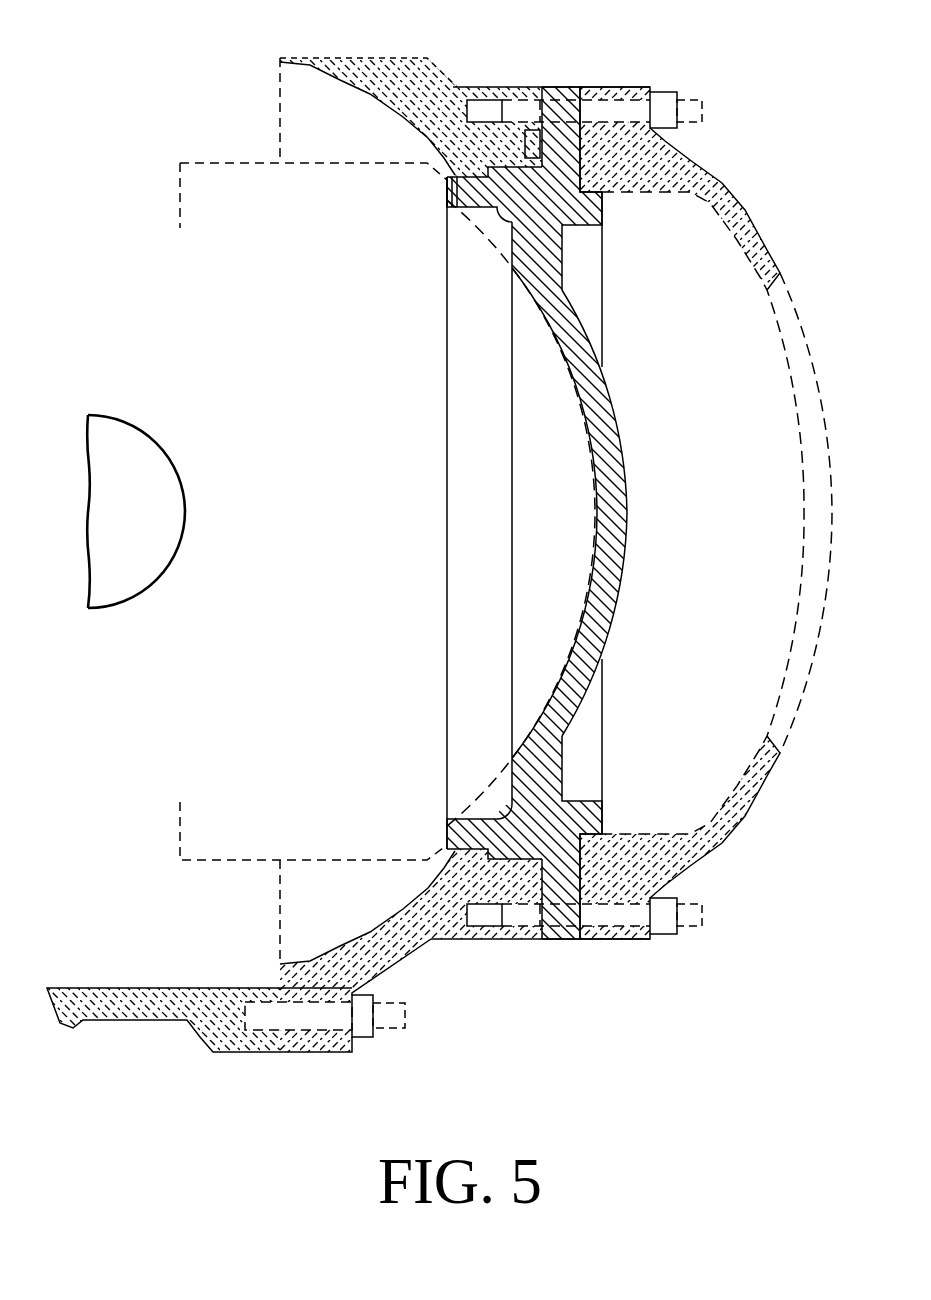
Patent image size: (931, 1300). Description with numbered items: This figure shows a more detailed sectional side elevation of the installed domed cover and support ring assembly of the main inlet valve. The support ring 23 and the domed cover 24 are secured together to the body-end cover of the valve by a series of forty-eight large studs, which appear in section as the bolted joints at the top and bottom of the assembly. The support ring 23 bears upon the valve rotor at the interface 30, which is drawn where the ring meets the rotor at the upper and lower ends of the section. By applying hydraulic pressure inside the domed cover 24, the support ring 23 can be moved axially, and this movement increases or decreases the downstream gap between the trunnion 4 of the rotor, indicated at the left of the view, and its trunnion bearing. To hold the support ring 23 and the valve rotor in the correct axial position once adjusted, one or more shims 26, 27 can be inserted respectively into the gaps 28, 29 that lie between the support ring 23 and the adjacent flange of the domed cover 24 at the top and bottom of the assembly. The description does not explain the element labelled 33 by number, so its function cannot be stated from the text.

The trunnion 4 is at (165, 538).
The support ring 23 is at (600, 465).
The domed cover 24 is at (802, 470).
The shim 26 is at (546, 87).
The shim 27 is at (584, 87).
The gap 28 is at (547, 939).
The gap 29 is at (584, 939).
The interface 30 is at (447, 192).
The shim 33 is at (470, 213).